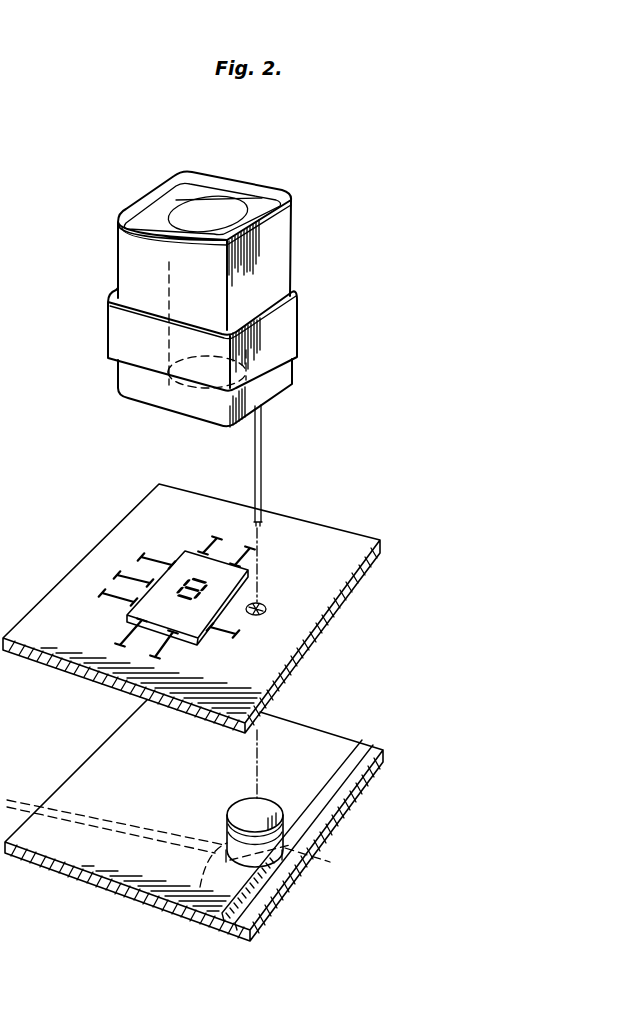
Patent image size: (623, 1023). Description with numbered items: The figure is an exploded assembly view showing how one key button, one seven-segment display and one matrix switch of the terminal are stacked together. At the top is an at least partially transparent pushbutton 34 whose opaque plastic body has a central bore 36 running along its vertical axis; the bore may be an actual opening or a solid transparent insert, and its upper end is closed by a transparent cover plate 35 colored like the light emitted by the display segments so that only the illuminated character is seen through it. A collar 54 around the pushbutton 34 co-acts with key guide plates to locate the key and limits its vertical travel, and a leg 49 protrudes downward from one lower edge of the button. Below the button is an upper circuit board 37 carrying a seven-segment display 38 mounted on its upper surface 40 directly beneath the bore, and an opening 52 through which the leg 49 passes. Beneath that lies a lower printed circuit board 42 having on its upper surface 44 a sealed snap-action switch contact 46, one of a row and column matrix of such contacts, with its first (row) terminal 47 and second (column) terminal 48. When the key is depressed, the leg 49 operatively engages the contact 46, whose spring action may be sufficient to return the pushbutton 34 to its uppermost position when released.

The pushbutton 34 is at (278, 238).
The transparent cover plate 35 is at (280, 211).
The central bore 36 is at (166, 262).
The collar 54 is at (285, 313).
The leg 49 is at (263, 445).
The upper circuit board 37 is at (335, 548).
The 7-segment display 38 is at (185, 548).
The upper surface 40 is at (150, 664).
The opening 52 is at (268, 608).
The lower printed circuit board 42 is at (318, 740).
The upper surface 44 is at (156, 828).
The snap-action switch contact 46 is at (268, 802).
The second (column) terminal 48 is at (293, 848).
The first (row) terminal 47 is at (200, 887).